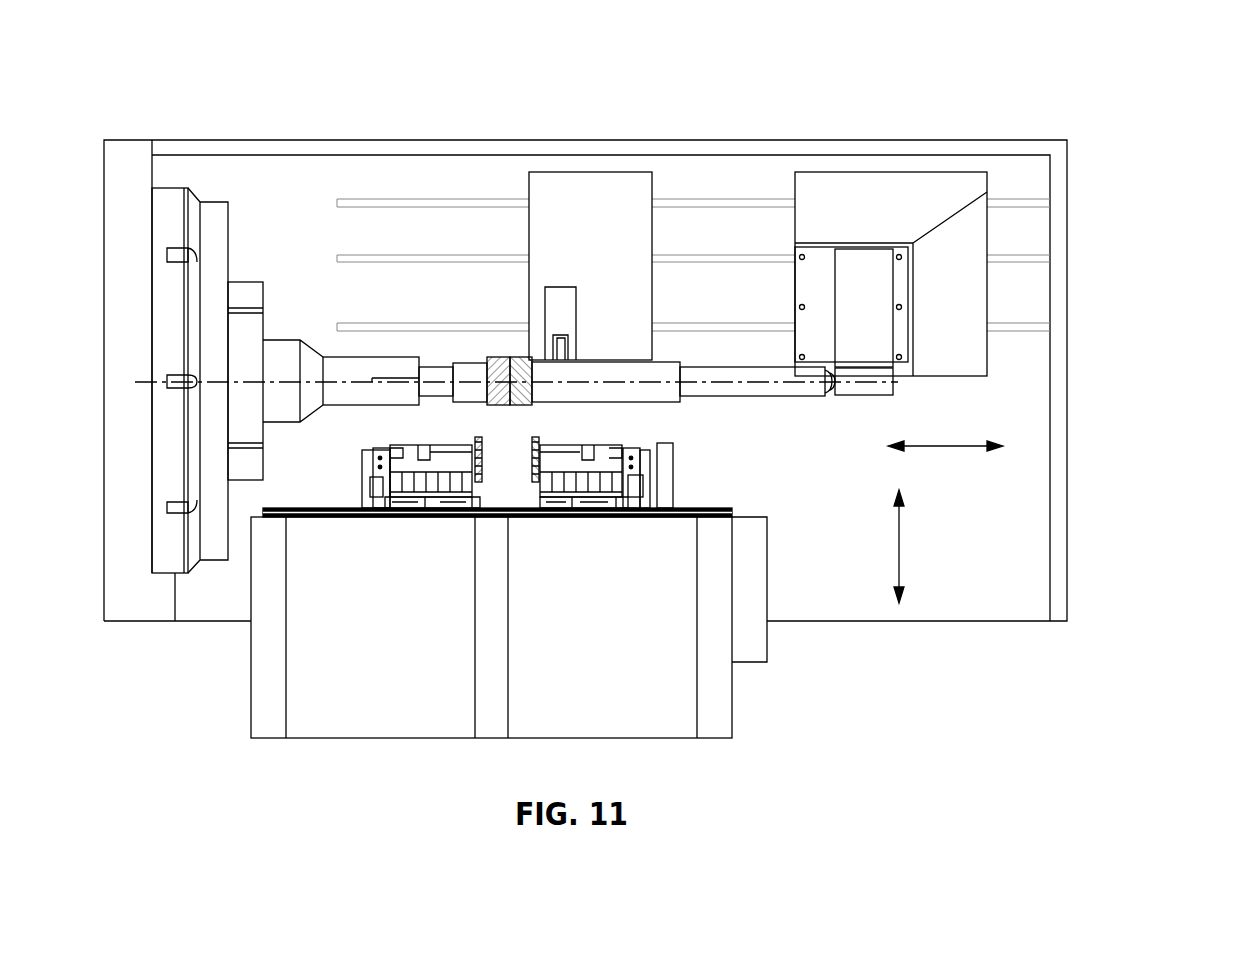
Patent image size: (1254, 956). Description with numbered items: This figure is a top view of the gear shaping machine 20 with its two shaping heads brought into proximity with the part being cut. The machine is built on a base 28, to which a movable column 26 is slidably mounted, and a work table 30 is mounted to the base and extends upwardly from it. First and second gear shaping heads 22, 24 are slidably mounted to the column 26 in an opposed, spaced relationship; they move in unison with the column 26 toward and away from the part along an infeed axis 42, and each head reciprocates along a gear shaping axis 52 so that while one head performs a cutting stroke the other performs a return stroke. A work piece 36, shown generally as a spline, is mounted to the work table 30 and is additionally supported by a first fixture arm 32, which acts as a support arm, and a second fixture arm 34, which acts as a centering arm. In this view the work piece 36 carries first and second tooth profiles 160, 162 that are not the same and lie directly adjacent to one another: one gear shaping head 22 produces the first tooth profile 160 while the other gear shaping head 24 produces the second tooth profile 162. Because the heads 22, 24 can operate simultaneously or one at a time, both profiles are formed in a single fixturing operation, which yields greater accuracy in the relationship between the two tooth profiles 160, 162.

The gear shaping machine 20 is at (1138, 162).
The first gear shaping head 22 is at (680, 499).
The second gear shaping head 24 is at (350, 499).
The movable column 26 is at (251, 680).
The base 28 is at (299, 140).
The work table 30 is at (127, 155).
The first fixture arm 32 is at (565, 187).
The second fixture arm 34 is at (916, 187).
The work piece 36 is at (720, 368).
The infeed axis 42 is at (899, 562).
The gear shaping axis 52 is at (970, 448).
The first tooth profile 160 is at (518, 357).
The second tooth profile 162 is at (495, 357).